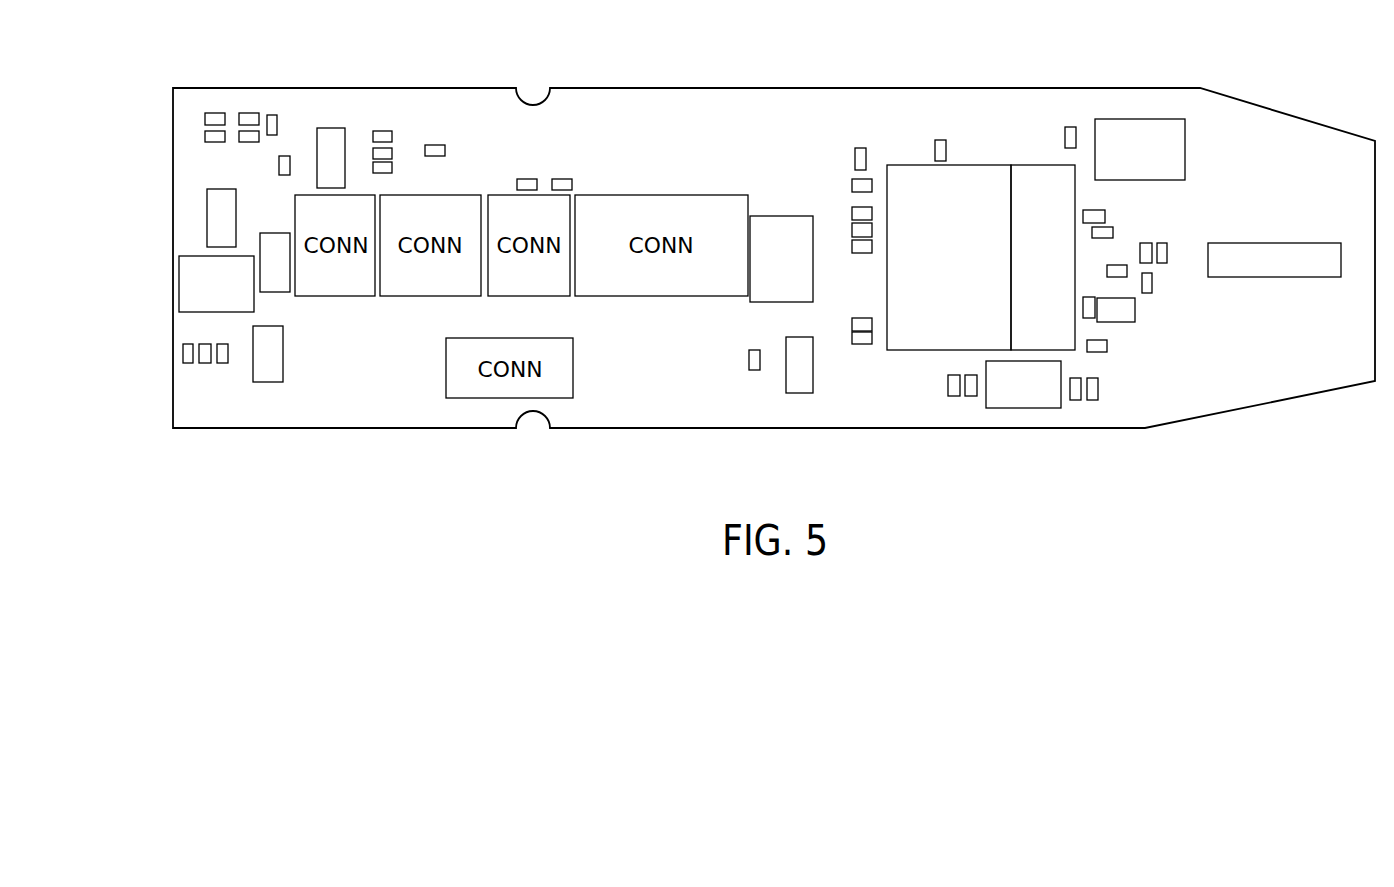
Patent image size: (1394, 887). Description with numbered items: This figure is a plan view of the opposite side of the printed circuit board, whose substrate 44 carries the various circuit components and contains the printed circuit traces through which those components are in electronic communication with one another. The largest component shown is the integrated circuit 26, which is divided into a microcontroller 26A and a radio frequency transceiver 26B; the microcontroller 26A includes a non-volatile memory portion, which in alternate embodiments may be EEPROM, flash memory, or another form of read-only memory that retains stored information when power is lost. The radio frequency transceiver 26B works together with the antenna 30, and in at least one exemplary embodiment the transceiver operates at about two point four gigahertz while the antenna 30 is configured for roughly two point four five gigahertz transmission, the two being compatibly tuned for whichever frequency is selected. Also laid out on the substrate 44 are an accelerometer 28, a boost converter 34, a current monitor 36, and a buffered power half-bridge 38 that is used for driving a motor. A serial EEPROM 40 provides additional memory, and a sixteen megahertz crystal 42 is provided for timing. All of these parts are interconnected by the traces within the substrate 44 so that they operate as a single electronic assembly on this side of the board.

The integrated circuit 26 is at (1050, 266).
The microcontroller 26A is at (920, 350).
The radio frequency (RF) transceiver 26B is at (1078, 328).
The accelerometer 28 is at (1113, 119).
The antenna 30 is at (1270, 277).
The boost converter 34 is at (275, 371).
The current monitor 36 is at (217, 204).
The buffered power half-bridge 38 is at (338, 145).
The serial EEPROM 40 is at (800, 378).
The crystal 42 is at (1046, 397).
The substrate 44 is at (845, 88).